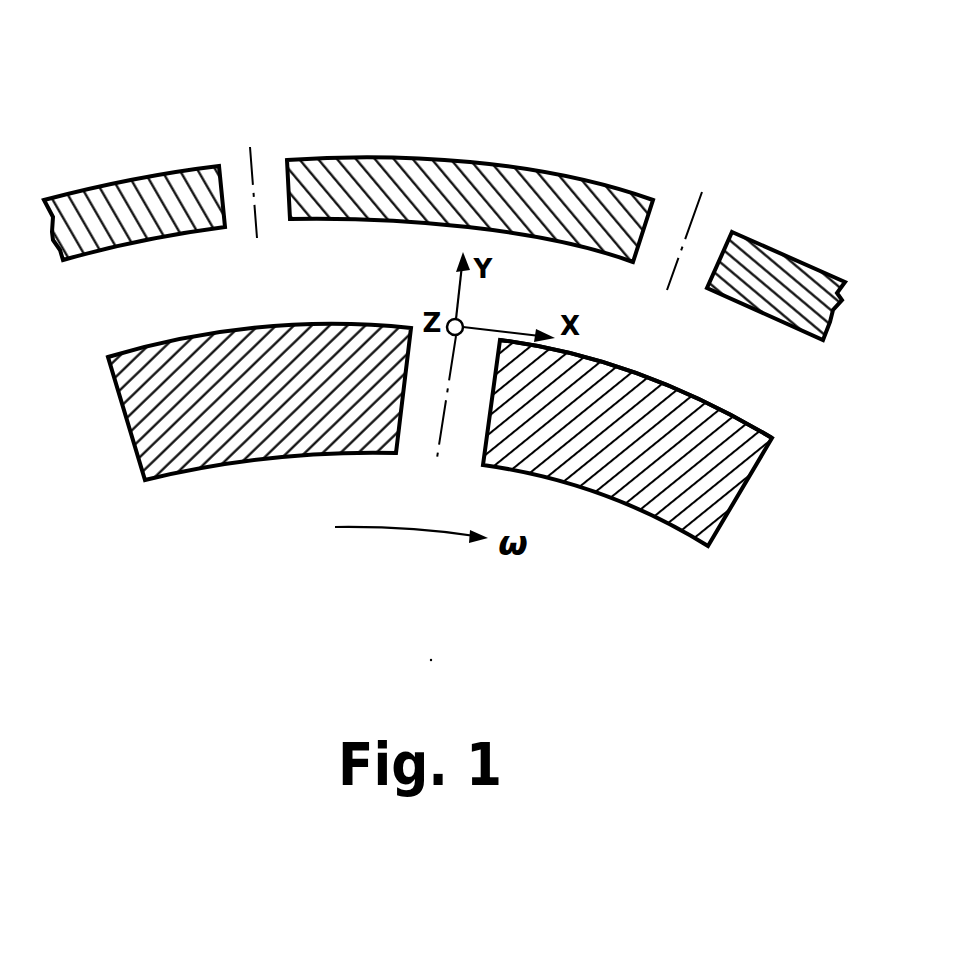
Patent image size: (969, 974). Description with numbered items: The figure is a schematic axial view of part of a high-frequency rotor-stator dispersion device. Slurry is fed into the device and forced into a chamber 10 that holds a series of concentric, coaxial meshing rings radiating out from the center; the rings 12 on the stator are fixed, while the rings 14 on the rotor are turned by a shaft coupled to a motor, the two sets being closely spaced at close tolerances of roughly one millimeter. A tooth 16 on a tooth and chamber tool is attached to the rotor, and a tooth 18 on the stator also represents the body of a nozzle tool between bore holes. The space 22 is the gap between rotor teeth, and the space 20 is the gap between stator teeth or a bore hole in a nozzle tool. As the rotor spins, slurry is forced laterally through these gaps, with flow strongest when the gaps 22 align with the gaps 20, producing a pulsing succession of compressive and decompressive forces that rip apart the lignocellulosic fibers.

The chamber 10 is at (480, 143).
The rings on the stator 12 is at (603, 188).
The rings on the rotor 14 is at (663, 525).
The tooth on a tooth and chamber tool attached to the rotor 16 is at (740, 416).
The tooth on a tooth and chamber tool attached to the stator 18 is at (787, 250).
The gap between teeth on the stator 20 is at (255, 185).
The gap between teeth on the rotor 22 is at (412, 455).